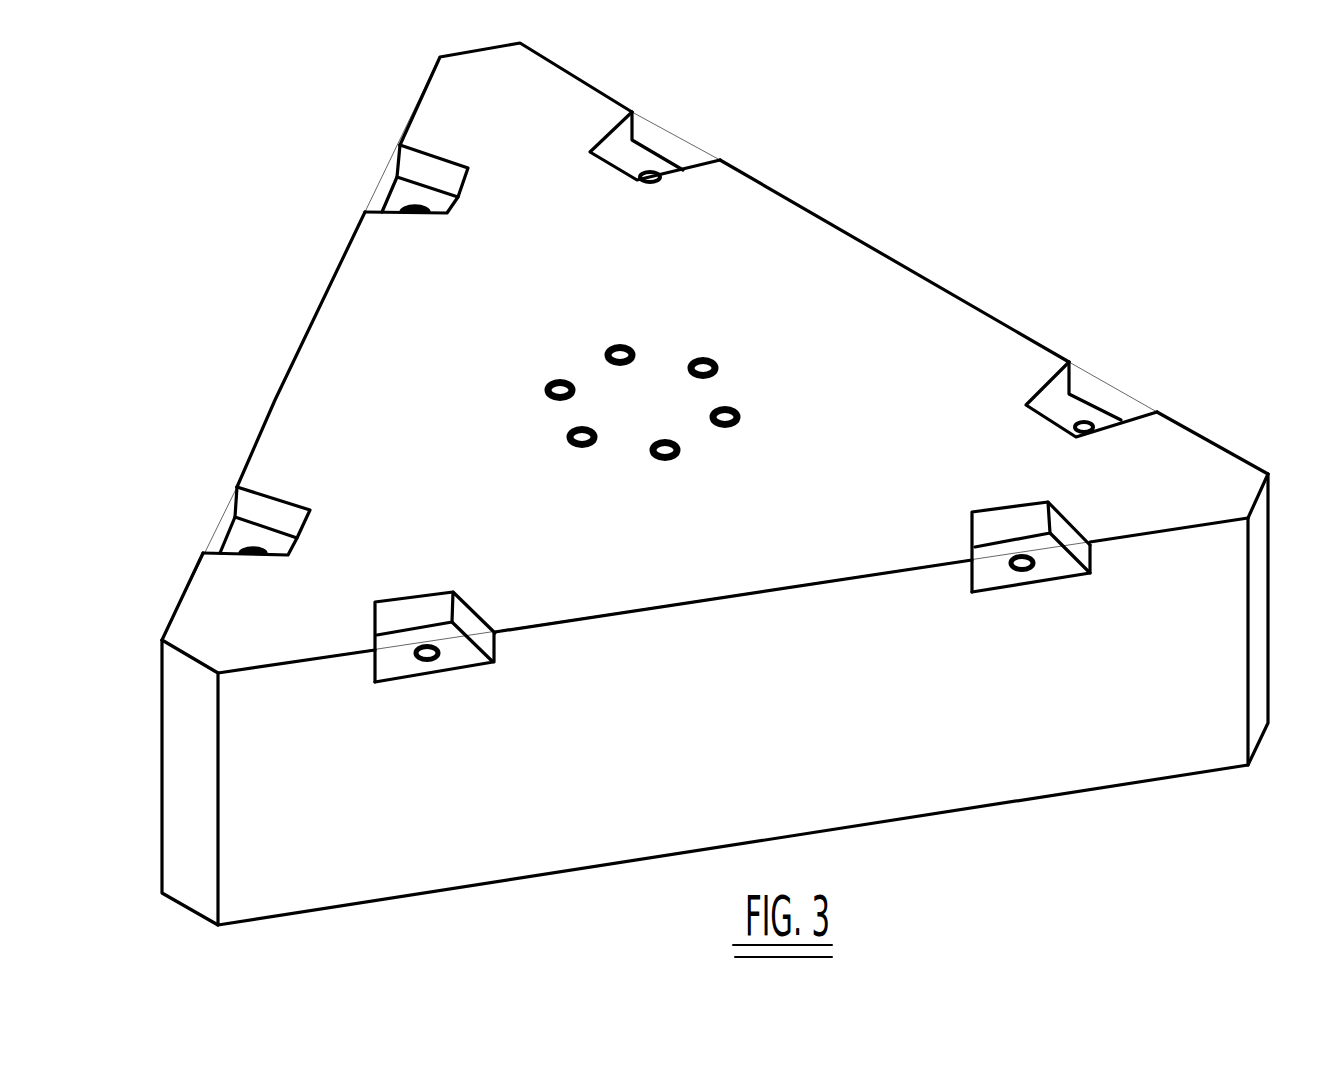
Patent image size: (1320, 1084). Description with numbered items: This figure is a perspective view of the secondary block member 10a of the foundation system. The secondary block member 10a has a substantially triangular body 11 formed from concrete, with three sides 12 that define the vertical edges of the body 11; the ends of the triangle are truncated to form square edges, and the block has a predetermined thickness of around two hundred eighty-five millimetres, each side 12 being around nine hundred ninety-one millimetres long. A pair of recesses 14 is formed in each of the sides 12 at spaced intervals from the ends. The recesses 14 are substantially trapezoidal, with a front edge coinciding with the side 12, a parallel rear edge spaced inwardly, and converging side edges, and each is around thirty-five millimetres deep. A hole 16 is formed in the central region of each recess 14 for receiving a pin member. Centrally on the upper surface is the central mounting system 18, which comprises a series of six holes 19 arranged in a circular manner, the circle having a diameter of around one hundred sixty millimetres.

The secondary block member 10a is at (700, 484).
The substantially triangular body 11 is at (447, 492).
The sides 12 is at (313, 320).
The recesses 14 is at (390, 194).
The hole 16 is at (1110, 418).
The central mounting system 18 is at (722, 312).
The holes 19 is at (733, 425).